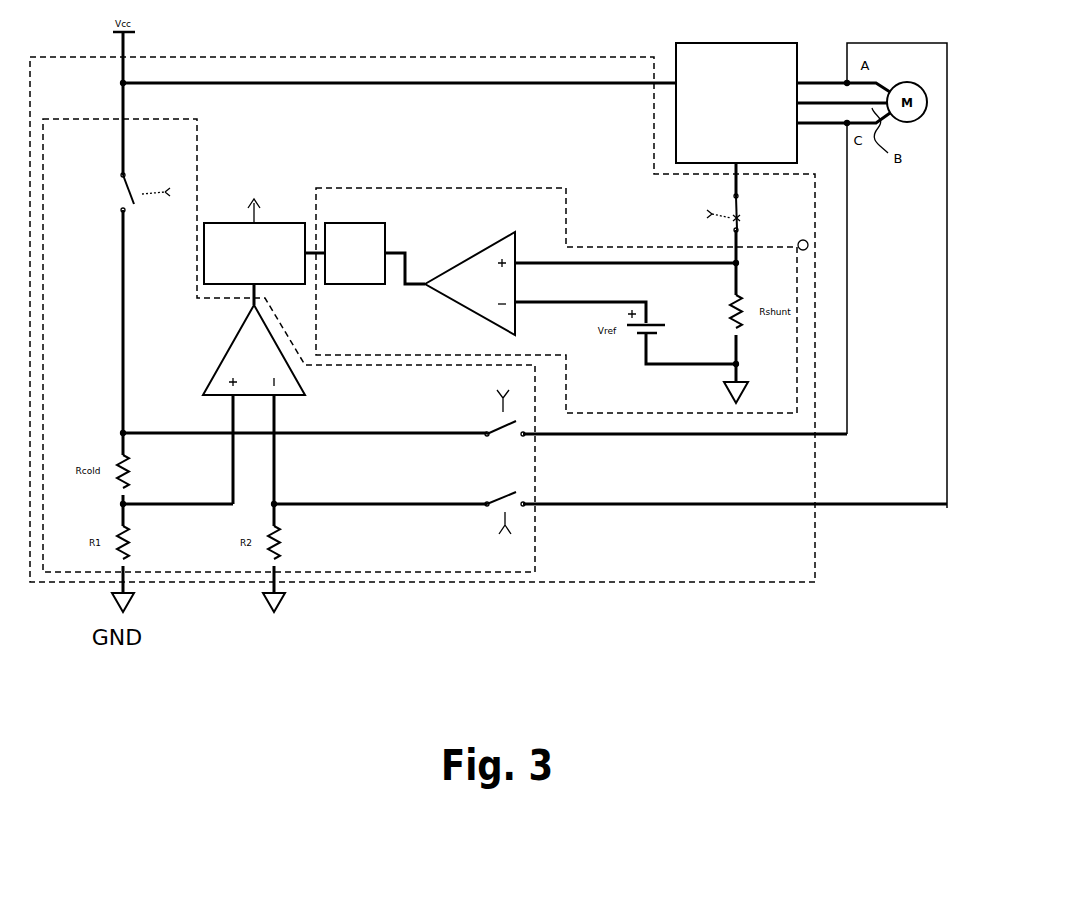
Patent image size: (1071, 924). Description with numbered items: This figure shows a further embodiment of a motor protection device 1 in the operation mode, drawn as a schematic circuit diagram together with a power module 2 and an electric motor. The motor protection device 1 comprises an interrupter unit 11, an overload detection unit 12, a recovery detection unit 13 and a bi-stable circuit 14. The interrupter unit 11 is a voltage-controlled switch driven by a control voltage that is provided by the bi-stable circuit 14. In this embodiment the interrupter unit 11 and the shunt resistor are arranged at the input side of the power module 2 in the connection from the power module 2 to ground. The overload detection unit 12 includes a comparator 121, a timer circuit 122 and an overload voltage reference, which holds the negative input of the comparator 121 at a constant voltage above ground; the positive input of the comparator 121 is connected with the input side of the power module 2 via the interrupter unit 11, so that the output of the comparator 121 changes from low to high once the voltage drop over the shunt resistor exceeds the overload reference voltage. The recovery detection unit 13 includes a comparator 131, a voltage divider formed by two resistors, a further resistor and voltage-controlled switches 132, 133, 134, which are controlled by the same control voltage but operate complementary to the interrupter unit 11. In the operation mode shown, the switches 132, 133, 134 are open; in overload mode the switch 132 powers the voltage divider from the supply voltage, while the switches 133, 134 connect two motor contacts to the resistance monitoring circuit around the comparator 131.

The motor protection device 1 is at (777, 563).
The power module 2 is at (728, 114).
The interrupter unit 11 is at (725, 224).
The overload detection unit 12 is at (351, 346).
The recovery detection unit 13 is at (341, 558).
The bi-stable circuit 14 is at (243, 265).
The comparator 121 is at (454, 294).
The timer circuit 122 is at (339, 263).
The comparator 131 is at (238, 371).
The voltage-controlled switch 132 is at (113, 200).
The voltage-controlled switch 133 is at (497, 438).
The voltage-controlled switch 134 is at (490, 512).